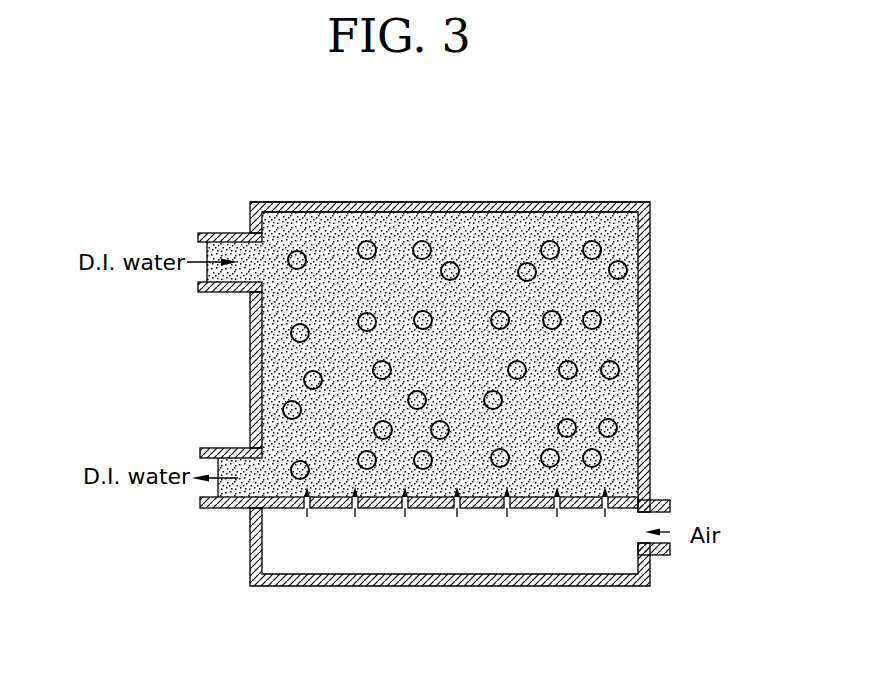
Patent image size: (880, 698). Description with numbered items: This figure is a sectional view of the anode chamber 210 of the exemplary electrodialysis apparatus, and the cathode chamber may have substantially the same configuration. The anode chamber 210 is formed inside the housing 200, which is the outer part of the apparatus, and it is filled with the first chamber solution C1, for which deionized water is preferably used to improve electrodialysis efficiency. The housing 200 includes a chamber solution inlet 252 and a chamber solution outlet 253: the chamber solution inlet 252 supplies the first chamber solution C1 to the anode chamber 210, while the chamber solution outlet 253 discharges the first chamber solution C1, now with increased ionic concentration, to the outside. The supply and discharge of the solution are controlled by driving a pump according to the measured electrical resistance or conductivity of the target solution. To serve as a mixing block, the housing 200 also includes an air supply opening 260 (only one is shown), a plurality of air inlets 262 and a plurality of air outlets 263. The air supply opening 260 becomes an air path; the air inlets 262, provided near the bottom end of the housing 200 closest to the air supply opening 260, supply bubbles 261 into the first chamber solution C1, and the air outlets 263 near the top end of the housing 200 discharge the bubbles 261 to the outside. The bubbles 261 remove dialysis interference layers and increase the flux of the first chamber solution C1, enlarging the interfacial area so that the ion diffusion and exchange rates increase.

The housing 200 is at (651, 246).
The anode chamber 210 is at (286, 283).
The chamber solution inlet 252 is at (207, 258).
The chamber solution outlet 253 is at (208, 490).
The air supply opening 260 is at (664, 534).
The bubbles 261 is at (302, 251).
The air inlet 262 is at (307, 509).
The air outlet 263 is at (387, 202).
The first chamber solution C1 is at (503, 230).